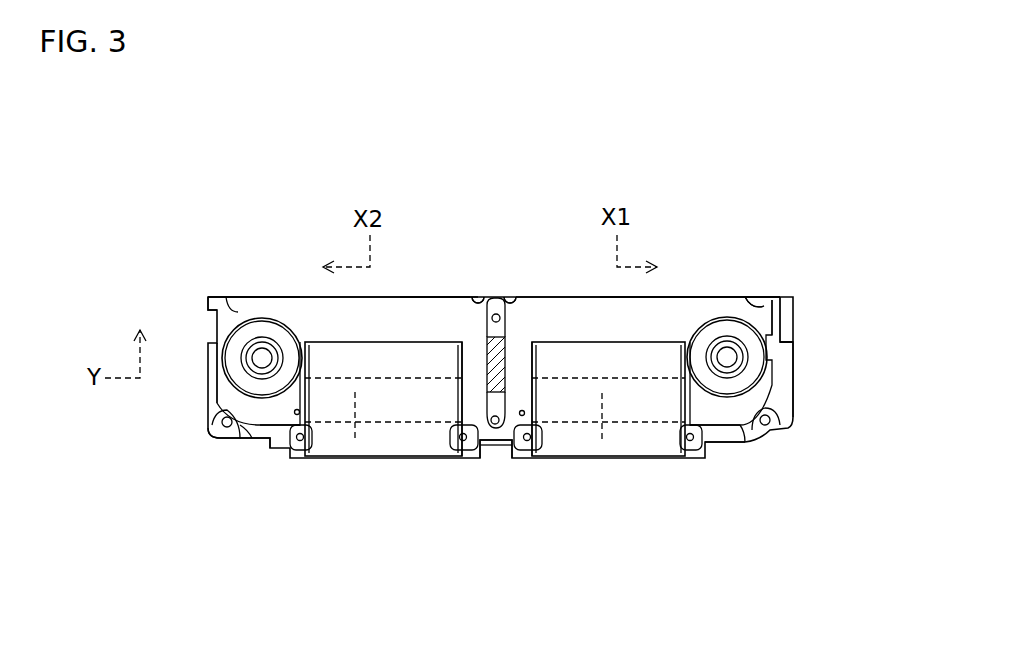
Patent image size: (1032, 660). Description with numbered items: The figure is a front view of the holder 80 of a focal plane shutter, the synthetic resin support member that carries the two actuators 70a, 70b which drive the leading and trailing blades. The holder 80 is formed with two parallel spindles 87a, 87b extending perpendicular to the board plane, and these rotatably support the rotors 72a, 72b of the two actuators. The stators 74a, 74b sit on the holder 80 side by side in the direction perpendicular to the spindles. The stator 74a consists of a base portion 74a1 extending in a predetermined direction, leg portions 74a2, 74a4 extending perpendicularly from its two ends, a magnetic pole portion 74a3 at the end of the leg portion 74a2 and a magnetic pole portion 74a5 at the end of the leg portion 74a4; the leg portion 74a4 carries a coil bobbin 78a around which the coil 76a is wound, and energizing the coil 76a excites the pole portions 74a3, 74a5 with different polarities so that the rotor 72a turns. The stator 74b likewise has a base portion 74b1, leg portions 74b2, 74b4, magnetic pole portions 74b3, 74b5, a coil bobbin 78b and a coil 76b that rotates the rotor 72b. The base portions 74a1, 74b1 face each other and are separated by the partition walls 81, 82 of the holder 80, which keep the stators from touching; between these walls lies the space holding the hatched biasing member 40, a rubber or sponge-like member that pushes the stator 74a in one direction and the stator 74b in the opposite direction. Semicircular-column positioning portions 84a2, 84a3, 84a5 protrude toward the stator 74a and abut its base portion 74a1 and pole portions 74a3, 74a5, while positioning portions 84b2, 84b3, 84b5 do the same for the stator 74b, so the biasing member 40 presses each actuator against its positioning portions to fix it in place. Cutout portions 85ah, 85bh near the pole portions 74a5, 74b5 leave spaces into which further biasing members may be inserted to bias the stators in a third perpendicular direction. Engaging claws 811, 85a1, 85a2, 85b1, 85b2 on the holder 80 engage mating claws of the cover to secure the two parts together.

The biasing member 40 is at (535, 297).
The actuator 70a is at (703, 282).
The actuator 70b is at (295, 262).
The rotor 72a is at (742, 380).
The rotor 72b is at (240, 378).
The stator 74a is at (575, 295).
The base portion 74a1 is at (518, 375).
The leg portion 74a2 is at (675, 297).
The magnetic pole portion 74a3 is at (748, 300).
The leg portion 74a4 is at (602, 393).
The magnetic pole portion 74a5 is at (718, 405).
The stator 74b is at (403, 295).
The base portion 74b1 is at (465, 380).
The leg portion 74b2 is at (447, 297).
The magnetic pole portion 74b3 is at (270, 297).
The leg portion 74b4 is at (355, 392).
The magnetic pole portion 74b5 is at (283, 403).
The coil 76a is at (580, 435).
The coil 76b is at (407, 442).
The coil bobbin 78a is at (680, 450).
The coil bobbin 78b is at (303, 450).
The holder 80 is at (797, 388).
The partition wall 81 is at (493, 425).
The engaging claw 811 is at (487, 447).
The partition wall 82 is at (496, 298).
The positioning portion 84a2 is at (512, 297).
The positioning portion 84a3 is at (780, 297).
The positioning portion 84a5 is at (797, 412).
The positioning portion 84b2 is at (482, 297).
The positioning portion 84b3 is at (225, 297).
The positioning portion 84b5 is at (212, 412).
The engaging claw 85a1 is at (745, 440).
The engaging claw 85a2 is at (787, 310).
The cutout portion 85ah is at (733, 428).
The engaging claw 85b1 is at (258, 447).
The engaging claw 85b2 is at (190, 297).
The cutout portion 85bh is at (252, 424).
The spindle 87a is at (740, 352).
The spindle 87b is at (260, 358).